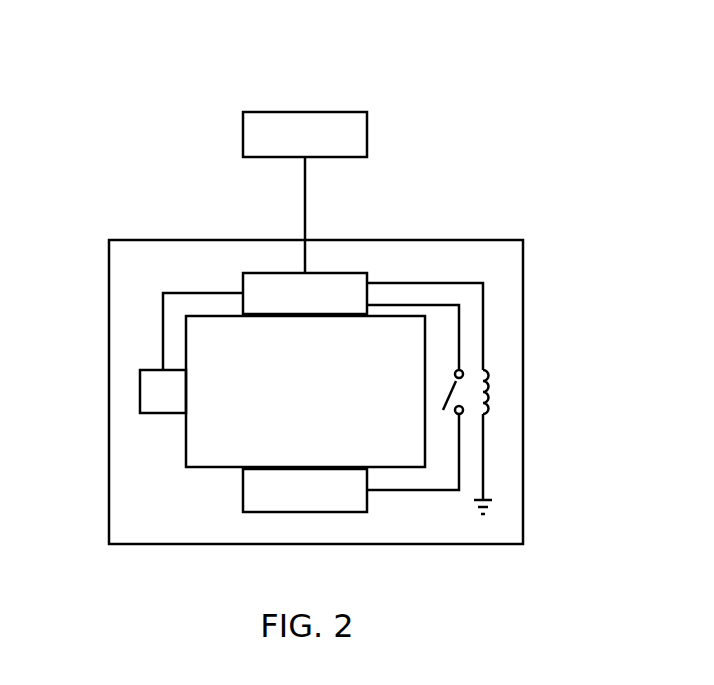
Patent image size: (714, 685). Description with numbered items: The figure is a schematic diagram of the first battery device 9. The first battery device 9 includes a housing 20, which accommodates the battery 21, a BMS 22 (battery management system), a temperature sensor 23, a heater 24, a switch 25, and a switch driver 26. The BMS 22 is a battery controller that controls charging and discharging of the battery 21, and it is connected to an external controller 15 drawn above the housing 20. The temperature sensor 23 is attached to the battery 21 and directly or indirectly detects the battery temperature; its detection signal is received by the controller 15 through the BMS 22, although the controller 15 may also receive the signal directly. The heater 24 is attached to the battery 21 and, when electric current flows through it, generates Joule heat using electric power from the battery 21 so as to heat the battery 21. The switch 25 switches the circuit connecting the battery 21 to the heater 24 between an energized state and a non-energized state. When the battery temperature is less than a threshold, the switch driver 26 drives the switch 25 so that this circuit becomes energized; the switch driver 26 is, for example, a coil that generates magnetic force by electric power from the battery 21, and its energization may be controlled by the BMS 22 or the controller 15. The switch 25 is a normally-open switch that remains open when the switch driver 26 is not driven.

The first battery device 9 is at (492, 234).
The controller 15 is at (344, 112).
The housing 20 is at (109, 336).
The battery 21 is at (203, 333).
The BMS 22 is at (350, 272).
The temperature sensor 23 is at (140, 392).
The heater 24 is at (344, 512).
The switch 25 is at (452, 388).
The switch driver 26 is at (490, 390).